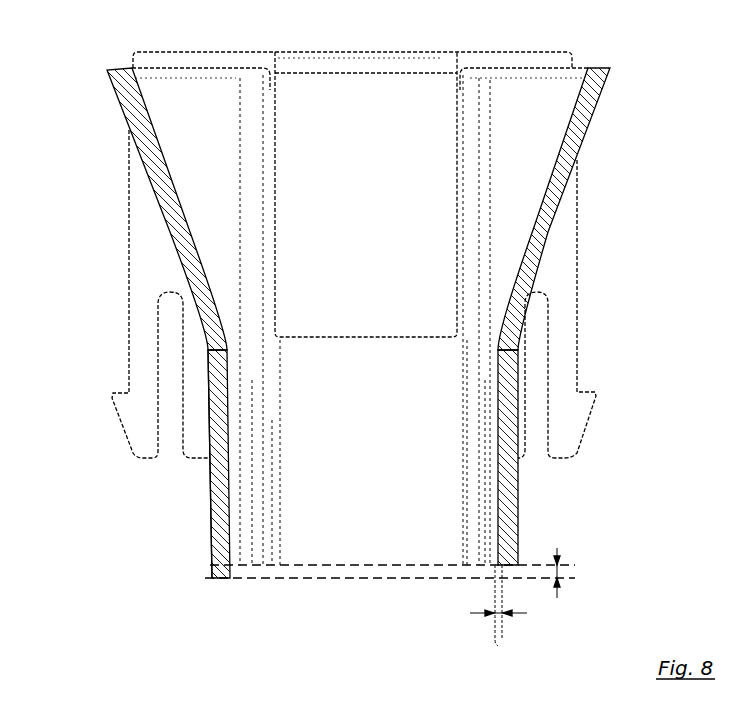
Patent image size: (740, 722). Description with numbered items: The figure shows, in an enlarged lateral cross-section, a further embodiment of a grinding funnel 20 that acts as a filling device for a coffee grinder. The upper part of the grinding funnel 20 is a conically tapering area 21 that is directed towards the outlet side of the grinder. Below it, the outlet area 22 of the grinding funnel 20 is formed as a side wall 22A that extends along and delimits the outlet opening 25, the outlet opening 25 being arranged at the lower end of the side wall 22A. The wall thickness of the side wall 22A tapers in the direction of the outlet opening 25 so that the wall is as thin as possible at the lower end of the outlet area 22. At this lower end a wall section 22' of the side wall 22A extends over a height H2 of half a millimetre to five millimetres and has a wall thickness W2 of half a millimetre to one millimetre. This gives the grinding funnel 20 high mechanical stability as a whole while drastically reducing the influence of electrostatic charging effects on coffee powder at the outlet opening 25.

The grinding funnel 20 is at (652, 29).
The conically tapering area 21 is at (148, 145).
The outlet area 22 is at (303, 464).
The side wall 22A is at (212, 530).
The outlet opening 25 is at (285, 584).
The wall section 22' is at (547, 611).
The height H2 is at (562, 571).
The wall thickness W2 is at (500, 643).